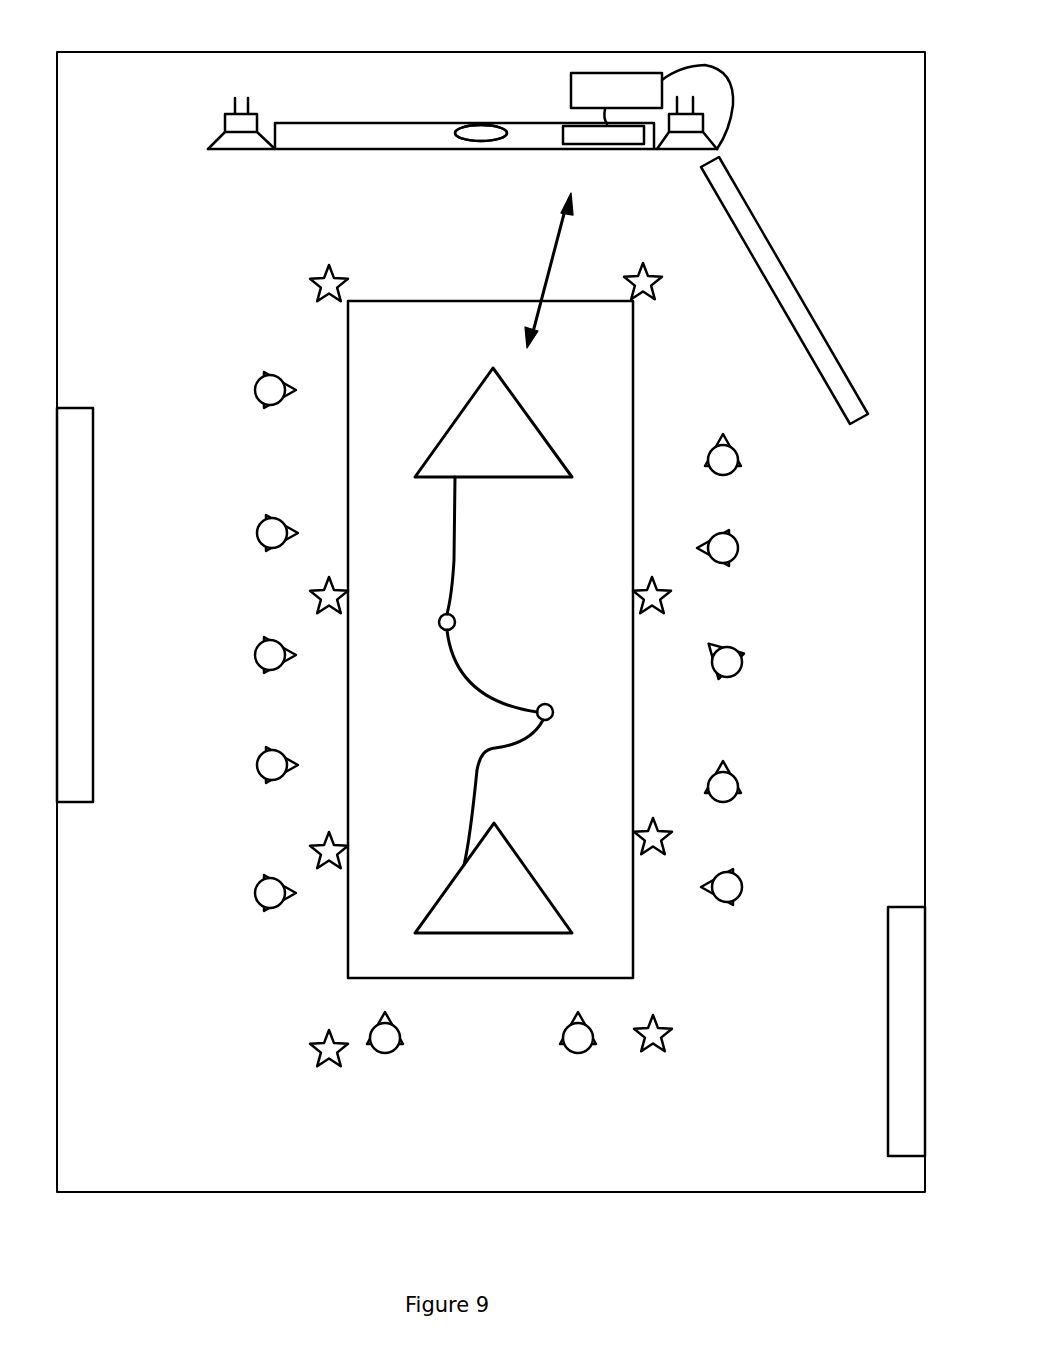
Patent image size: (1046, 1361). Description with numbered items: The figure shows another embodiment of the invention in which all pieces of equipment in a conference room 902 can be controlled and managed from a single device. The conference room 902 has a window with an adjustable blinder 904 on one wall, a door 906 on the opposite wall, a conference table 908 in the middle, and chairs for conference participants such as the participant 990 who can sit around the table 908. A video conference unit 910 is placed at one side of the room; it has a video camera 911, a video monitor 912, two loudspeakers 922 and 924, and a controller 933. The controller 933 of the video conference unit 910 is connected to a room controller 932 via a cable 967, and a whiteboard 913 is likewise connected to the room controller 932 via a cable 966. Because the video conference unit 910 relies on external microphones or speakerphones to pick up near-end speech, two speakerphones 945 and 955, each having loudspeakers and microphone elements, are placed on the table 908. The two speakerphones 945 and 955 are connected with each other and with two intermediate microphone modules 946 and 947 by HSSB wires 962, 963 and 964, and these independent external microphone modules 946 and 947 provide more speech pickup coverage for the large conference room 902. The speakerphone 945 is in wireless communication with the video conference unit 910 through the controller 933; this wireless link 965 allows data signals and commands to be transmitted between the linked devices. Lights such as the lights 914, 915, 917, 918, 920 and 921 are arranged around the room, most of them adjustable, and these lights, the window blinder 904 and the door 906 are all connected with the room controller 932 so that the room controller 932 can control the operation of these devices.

The conference room 902 is at (225, 52).
The adjustable blinder 904 is at (80, 408).
The door 906 is at (888, 1107).
The conference table 908 is at (495, 301).
The video conference unit 910 is at (420, 123).
The video camera 911 is at (497, 126).
The video monitor 912 is at (295, 149).
The whiteboard 913 is at (815, 320).
The light 914 is at (320, 270).
The light 915 is at (658, 298).
The light 917 is at (318, 595).
The light 918 is at (320, 840).
The light 920 is at (335, 1068).
The light 921 is at (658, 1052).
The loudspeaker 922 is at (247, 98).
The loudspeaker 924 is at (691, 112).
The room controller 932 is at (600, 73).
The controller 933 is at (562, 150).
The speakerphone 945 is at (455, 420).
The intermediate microphone module 946 is at (455, 617).
The intermediate microphone module 947 is at (547, 722).
The speakerphone 955 is at (448, 885).
The HSSB wire 962 is at (455, 578).
The HSSB wire 963 is at (457, 660).
The HSSB wire 964 is at (475, 770).
The wireless link 965 is at (567, 215).
The cable 966 is at (727, 133).
The cable 967 is at (609, 128).
The conference participant 990 is at (580, 1056).